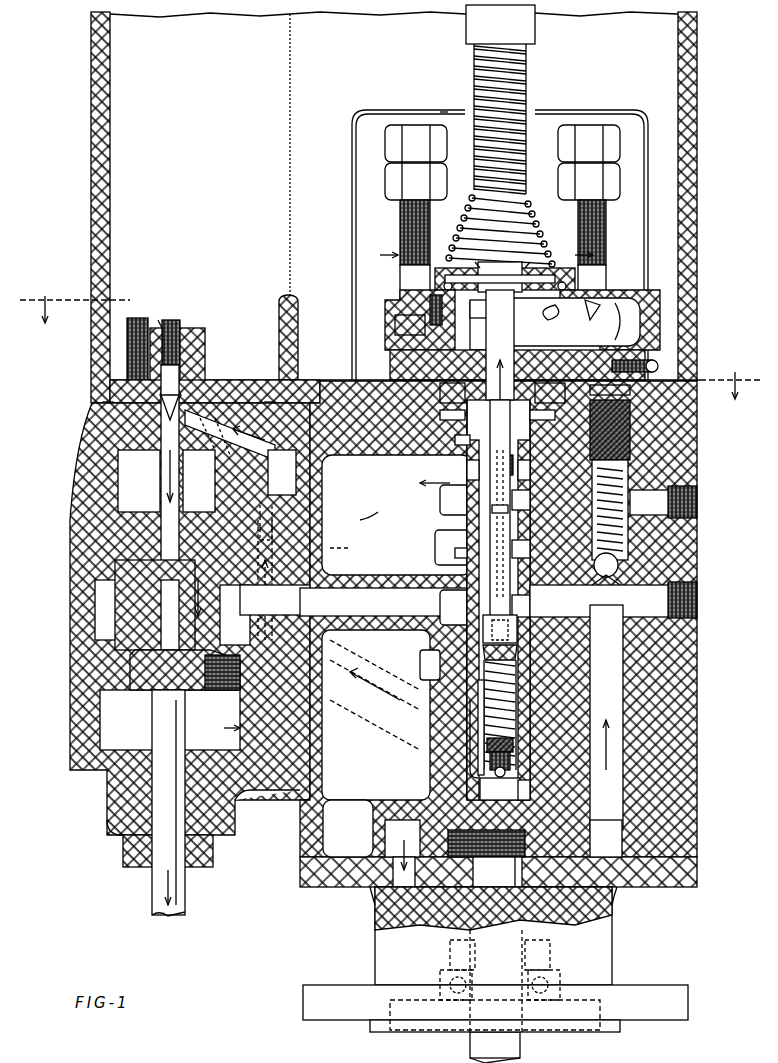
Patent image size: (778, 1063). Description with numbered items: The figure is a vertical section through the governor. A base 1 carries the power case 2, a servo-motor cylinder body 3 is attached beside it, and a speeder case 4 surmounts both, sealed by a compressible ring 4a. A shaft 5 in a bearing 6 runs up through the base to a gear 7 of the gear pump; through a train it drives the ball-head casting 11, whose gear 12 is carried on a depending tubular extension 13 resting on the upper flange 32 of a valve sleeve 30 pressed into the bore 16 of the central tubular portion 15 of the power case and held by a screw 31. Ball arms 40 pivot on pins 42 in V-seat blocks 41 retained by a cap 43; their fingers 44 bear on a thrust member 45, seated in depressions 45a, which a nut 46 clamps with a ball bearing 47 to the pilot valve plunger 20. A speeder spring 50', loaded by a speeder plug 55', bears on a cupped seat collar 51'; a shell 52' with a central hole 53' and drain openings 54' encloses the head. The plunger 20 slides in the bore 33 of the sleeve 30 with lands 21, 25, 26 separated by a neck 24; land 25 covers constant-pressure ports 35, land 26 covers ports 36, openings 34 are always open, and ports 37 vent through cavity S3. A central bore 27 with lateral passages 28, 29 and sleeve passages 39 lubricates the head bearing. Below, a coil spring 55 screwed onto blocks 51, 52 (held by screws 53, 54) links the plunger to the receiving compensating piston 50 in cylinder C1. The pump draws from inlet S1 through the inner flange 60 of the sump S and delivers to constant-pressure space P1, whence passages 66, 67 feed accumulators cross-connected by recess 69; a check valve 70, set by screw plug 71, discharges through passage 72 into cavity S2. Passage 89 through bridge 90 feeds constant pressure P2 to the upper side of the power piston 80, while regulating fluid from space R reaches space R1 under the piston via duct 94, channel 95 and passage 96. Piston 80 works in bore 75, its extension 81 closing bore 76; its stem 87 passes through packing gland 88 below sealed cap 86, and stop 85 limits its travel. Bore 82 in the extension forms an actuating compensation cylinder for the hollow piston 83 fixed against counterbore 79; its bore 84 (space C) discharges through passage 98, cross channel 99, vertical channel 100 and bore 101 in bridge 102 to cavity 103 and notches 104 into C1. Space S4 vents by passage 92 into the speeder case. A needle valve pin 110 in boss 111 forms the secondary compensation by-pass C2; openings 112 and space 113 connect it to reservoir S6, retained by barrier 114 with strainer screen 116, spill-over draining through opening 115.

The base or adapter 1 is at (612, 920).
The power case 2 is at (705, 742).
The servo-motor cylinder body 3 is at (72, 536).
The speeder case 4 is at (91, 152).
The inset compressible ring 4a is at (103, 406).
The shaft 5 is at (496, 960).
The bearing 6 is at (445, 975).
The gear 7 is at (478, 858).
The ball-head casting 11 is at (618, 308).
The gear 12 is at (445, 393).
The depending tubular extension 13 is at (540, 388).
The central tubular portion 15 is at (424, 482).
The bore 16 is at (525, 715).
The pilot valve plunger 20 is at (470, 356).
The land 21 is at (498, 345).
The neck or reduced portion 24 is at (535, 520).
The land 25 is at (485, 638).
The land 26 is at (498, 520).
The central bore 27 is at (468, 466).
The lateral passages 28 is at (520, 660).
The lateral passages 29 is at (525, 465).
The valve sleeve 30 is at (530, 415).
The screw 31 is at (610, 393).
The upper flange 32 is at (467, 436).
The bore 33 is at (470, 600).
The lateral openings 34 is at (522, 550).
The lateral ports 35 is at (520, 605).
The lateral ports 36 is at (522, 500).
The ports 37 is at (520, 675).
The lateral passages 39 is at (440, 415).
The ball arms 40 is at (502, 245).
The hardened V-seat blocks 41 is at (392, 320).
The pivot pins 42 is at (392, 300).
The cap 43 is at (435, 284).
The ball arm fingers 44 is at (551, 324).
The ball finger thrust member 45 is at (485, 310).
The depressions 45a is at (571, 318).
The nut 46 is at (475, 262).
The ball bearing 47 is at (532, 262).
The receiving compensating piston 50 is at (532, 764).
The speeder spring 50' is at (510, 155).
The sleeve or block 51 is at (454, 658).
The cupped spring seat collar 51' is at (595, 215).
The sleeve or block 52 is at (529, 742).
The shell 52' is at (378, 215).
The screw 53 is at (458, 682).
The central hole 53' is at (437, 100).
The screw 54 is at (459, 736).
The drain openings 54' is at (500, 222).
The coil spring 55 is at (529, 715).
The speeder plug 55' is at (527, 24).
The inner flange 60 is at (386, 822).
The horizontal passage 66 is at (613, 596).
The vertical passage 67 is at (606, 717).
The recess 69 is at (598, 856).
The spring pressed check valve 70 is at (610, 518).
The screw plug 71 is at (622, 455).
The discharge passage 72 is at (631, 502).
The main power cylinder bore 75 is at (95, 600).
The bore 76 is at (118, 498).
The counterbore 79 is at (200, 372).
The power piston 80 is at (152, 660).
The tubular upward extension 81 is at (132, 554).
The bore 82 is at (160, 604).
The actuating compensation piston 83 is at (180, 490).
The hollow bore 84 is at (162, 466).
The adjustable stop 85 is at (127, 340).
The sealed cap 86 is at (75, 788).
The stem 87 is at (160, 905).
The packing gland assembly 88 is at (125, 815).
The passage 89 is at (342, 590).
The bridge portion 90 is at (365, 518).
The diagonally extending passage 92 is at (199, 481).
The horizontal duct 94 is at (360, 545).
The vertical duct 95 is at (262, 560).
The passage 96 is at (258, 790).
The diagonally extending passage 98 is at (230, 445).
The cross channel 99 is at (282, 472).
The vertical channel 100 is at (268, 503).
The bore 101 is at (400, 735).
The bridge portion 102 is at (360, 722).
The enlarged cavity 103 is at (468, 760).
The notches 104 is at (530, 797).
The threaded needle valve pin 110 is at (188, 320).
The boss 111 is at (165, 320).
The lateral openings 112 is at (205, 395).
The enlarged space 113 is at (380, 392).
The barrier wall 114 is at (283, 296).
The opening 115 is at (500, 385).
The strainer screen 116 is at (290, 172).
The compensation fluid space C is at (181, 615).
The receiving compensation cylinder C1 is at (500, 790).
The secondary compensation by-pass C2 is at (183, 392).
The constant pressure space P1 is at (455, 607).
The constant pressure area P2 is at (235, 615).
The regulating fluid space R is at (452, 547).
The regulating space R1 is at (218, 729).
The sump S is at (397, 627).
The pump inlet S1 is at (405, 876).
The cavity S2 is at (455, 500).
The cavity S3 is at (434, 665).
The cylinder space S4 is at (200, 505).
The reservoir space S6 is at (237, 317).